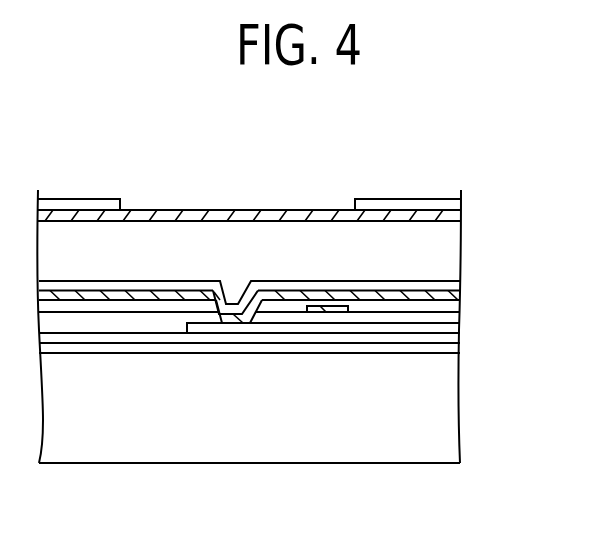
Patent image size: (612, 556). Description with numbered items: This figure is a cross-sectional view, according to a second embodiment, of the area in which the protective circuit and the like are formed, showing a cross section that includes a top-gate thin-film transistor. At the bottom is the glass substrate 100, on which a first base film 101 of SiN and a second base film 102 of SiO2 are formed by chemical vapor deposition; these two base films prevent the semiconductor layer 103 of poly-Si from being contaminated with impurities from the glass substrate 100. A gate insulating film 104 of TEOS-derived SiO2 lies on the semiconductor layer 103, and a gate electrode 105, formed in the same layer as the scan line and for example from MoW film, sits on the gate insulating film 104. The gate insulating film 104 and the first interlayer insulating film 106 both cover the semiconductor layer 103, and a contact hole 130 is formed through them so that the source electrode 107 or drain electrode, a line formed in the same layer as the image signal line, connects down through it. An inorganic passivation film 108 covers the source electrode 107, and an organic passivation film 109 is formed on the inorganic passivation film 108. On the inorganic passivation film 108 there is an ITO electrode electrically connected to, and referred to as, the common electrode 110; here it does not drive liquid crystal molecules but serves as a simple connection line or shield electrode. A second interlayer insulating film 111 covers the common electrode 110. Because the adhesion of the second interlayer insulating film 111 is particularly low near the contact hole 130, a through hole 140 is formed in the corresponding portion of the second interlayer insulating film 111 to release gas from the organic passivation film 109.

The glass substrate 100 is at (432, 412).
The first base film 101 is at (447, 350).
The second base film 102 is at (447, 340).
The semiconductor layer 103 is at (448, 329).
The gate insulating film 104 is at (405, 320).
The gate electrode 105 is at (340, 312).
The first interlayer insulating film 106 is at (292, 308).
The source electrode 107 is at (153, 295).
The inorganic passivation film 108 is at (462, 285).
The organic passivation film 109 is at (443, 247).
The common electrode 110 is at (452, 219).
The second interlayer insulating film 111 is at (458, 204).
The contact hole 130 is at (245, 325).
The through hole 140 is at (243, 206).